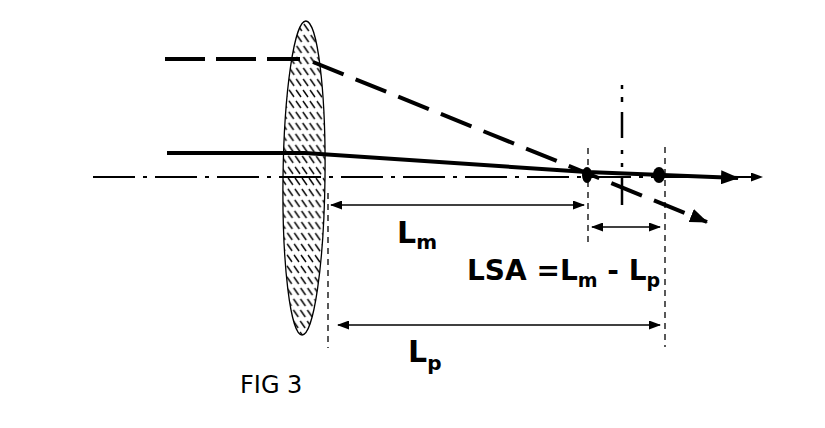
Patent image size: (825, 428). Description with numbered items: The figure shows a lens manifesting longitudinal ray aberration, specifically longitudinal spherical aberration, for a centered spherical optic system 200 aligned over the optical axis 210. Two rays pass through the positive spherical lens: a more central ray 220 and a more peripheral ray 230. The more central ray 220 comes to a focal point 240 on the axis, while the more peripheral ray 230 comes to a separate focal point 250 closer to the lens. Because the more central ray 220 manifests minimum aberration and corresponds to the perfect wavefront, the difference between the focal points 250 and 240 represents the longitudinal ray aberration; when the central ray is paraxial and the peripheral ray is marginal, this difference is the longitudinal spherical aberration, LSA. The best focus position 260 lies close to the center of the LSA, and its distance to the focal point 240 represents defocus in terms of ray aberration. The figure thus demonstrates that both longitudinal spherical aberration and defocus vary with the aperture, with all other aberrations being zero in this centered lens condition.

The centered spherical optic system 200 is at (266, 304).
The optical axis 210 is at (146, 181).
The more central ray 220 is at (177, 148).
The more peripheral ray 230 is at (203, 59).
The focal point of the central ray 240 is at (666, 161).
The focal point of the peripheral ray 250 is at (579, 161).
The best focus position 260 is at (629, 125).